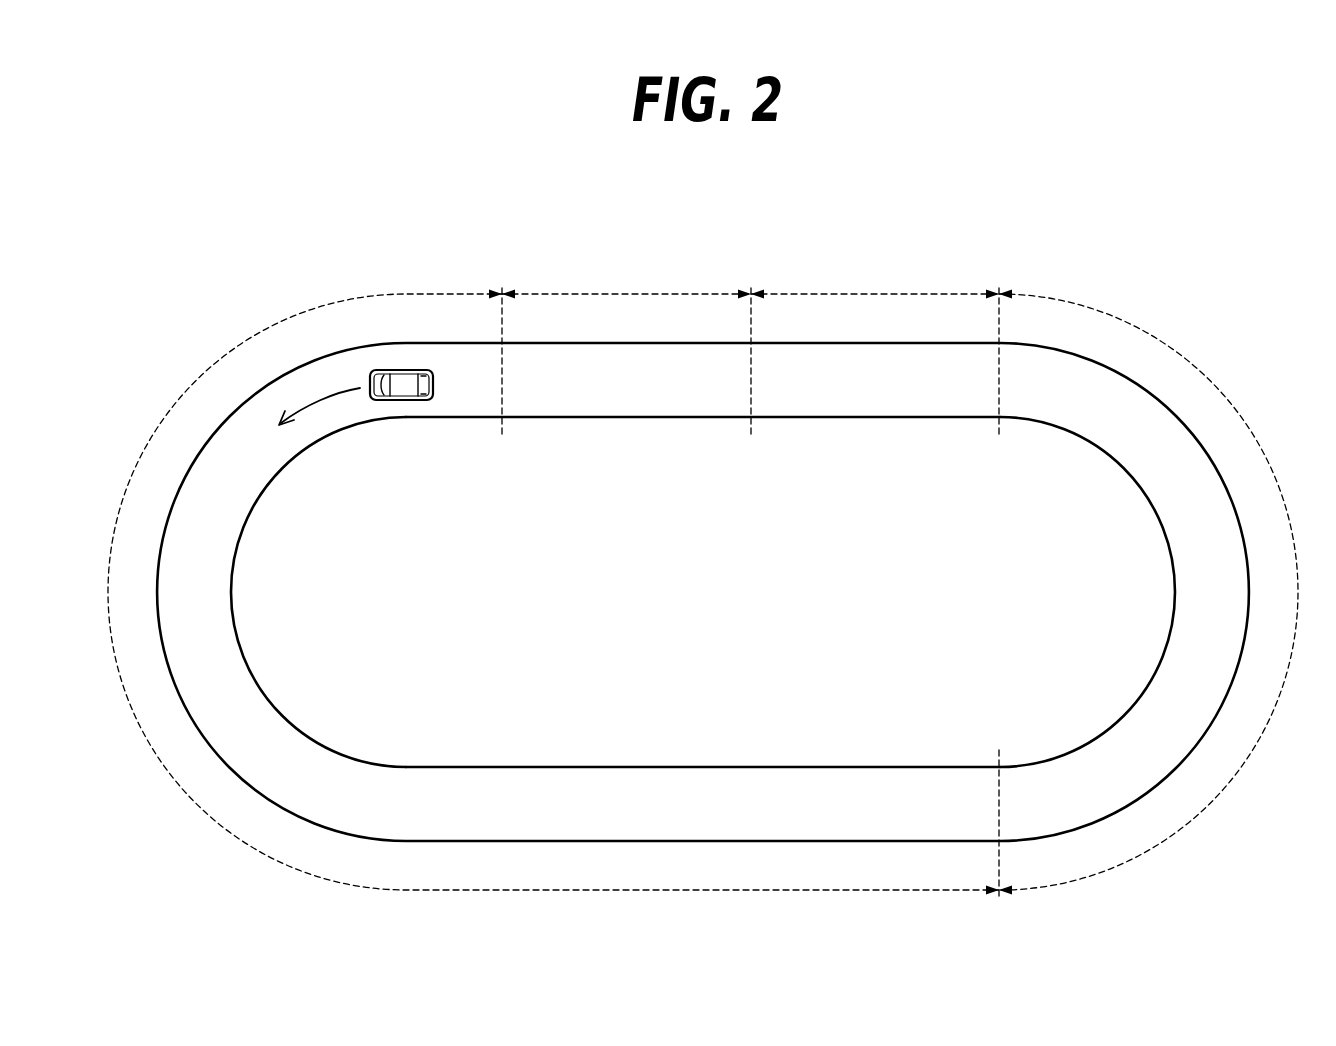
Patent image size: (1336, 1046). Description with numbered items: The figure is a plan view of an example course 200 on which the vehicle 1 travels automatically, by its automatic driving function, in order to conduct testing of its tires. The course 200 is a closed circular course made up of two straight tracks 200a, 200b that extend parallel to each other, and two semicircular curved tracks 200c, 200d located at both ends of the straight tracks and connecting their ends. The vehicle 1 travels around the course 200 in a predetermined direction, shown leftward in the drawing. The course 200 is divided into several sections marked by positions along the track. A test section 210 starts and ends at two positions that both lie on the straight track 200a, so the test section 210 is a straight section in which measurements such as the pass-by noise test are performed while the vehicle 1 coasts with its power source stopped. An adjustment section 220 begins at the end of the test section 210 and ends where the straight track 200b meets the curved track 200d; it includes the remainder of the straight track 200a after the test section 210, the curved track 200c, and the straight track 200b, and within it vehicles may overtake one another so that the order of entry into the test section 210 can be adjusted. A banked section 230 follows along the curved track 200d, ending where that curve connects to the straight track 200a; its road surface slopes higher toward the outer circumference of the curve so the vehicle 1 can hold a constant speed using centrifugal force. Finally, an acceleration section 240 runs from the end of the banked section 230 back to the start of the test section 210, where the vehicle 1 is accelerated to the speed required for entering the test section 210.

The vehicle 1 is at (388, 385).
The course 200 is at (1175, 268).
The straight track 200a is at (693, 403).
The straight track 200b is at (638, 782).
The curved track 200c is at (210, 610).
The curved track 200d is at (1193, 588).
The test section 210 is at (624, 294).
The adjustment section 220 is at (313, 306).
The banked section 230 is at (1200, 372).
The acceleration section 240 is at (877, 294).